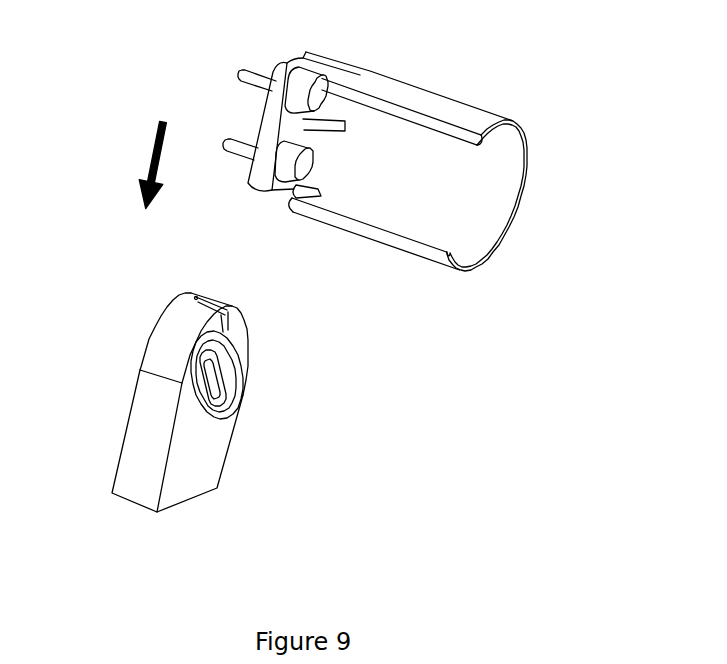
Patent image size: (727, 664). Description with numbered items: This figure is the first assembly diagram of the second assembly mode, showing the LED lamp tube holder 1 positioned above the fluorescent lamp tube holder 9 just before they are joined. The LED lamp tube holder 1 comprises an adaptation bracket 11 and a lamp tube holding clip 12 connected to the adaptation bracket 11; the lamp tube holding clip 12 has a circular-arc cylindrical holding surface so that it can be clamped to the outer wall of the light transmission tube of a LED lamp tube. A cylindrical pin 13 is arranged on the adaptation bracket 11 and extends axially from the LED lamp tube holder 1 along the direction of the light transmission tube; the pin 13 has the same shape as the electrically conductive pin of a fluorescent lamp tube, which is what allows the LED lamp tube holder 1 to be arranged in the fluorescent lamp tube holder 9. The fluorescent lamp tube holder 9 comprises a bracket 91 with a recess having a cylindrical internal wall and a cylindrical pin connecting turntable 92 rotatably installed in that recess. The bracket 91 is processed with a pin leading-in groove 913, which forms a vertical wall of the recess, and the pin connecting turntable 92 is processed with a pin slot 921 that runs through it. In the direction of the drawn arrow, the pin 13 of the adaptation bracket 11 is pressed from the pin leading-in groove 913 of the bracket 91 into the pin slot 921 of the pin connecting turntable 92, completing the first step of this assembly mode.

The LED lamp tube holder 1 is at (483, 75).
The adaptation bracket 11 is at (265, 128).
The lamp tube holding clip 12 is at (473, 118).
The pin 13 is at (240, 70).
The fluorescent lamp tube holder 9 is at (95, 331).
The bracket 91 is at (145, 422).
The pin connecting turntable 92 is at (198, 405).
The pin leading-in groove 913 is at (226, 311).
The pin slot 921 is at (216, 382).